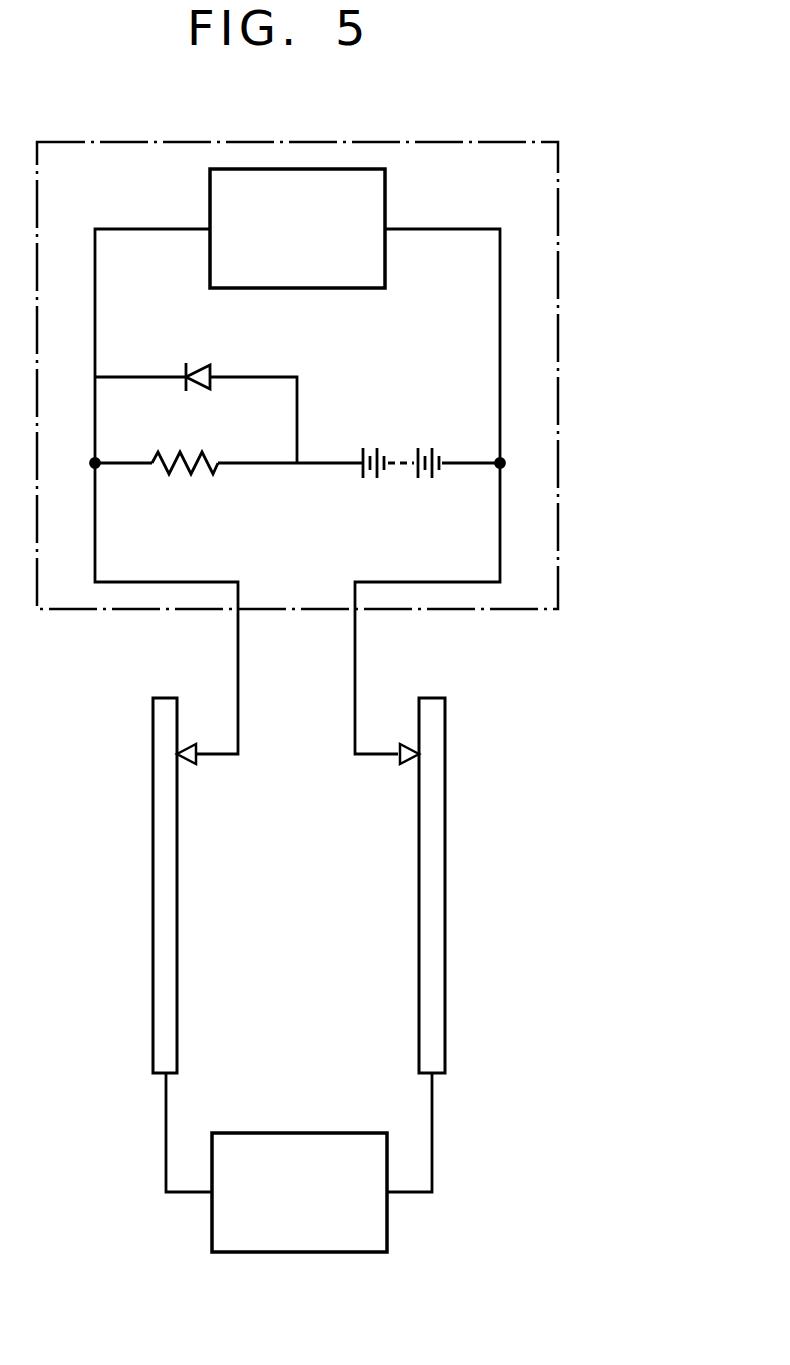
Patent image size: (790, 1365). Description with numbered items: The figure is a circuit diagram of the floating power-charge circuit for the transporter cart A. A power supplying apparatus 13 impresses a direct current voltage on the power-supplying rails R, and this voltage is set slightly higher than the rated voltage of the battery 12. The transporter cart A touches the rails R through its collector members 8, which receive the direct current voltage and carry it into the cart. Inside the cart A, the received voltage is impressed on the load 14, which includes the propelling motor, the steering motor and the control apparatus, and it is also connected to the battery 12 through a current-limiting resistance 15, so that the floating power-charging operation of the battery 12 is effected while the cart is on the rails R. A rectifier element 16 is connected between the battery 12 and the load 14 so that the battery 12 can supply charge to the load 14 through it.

The transporter cart A is at (558, 213).
The load 14 is at (387, 200).
The rectifier element 16 is at (213, 370).
The current-limiting resistance 15 is at (213, 457).
The battery 12 is at (417, 452).
The collector member 8 is at (189, 762).
The power-supplying rail R is at (153, 832).
The power supplying apparatus 13 is at (338, 1253).